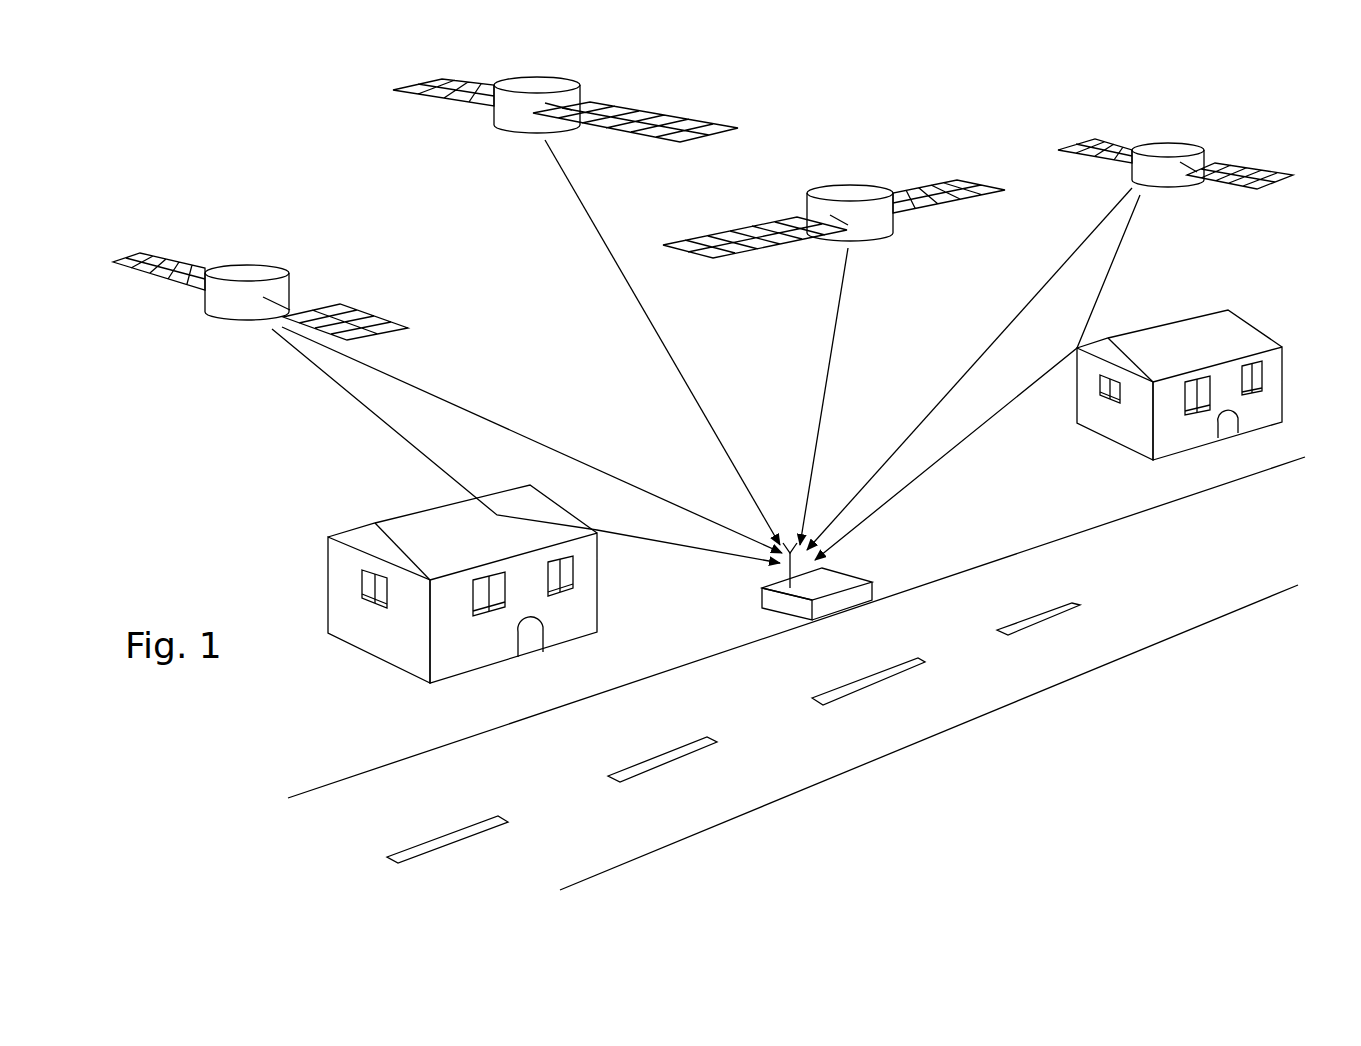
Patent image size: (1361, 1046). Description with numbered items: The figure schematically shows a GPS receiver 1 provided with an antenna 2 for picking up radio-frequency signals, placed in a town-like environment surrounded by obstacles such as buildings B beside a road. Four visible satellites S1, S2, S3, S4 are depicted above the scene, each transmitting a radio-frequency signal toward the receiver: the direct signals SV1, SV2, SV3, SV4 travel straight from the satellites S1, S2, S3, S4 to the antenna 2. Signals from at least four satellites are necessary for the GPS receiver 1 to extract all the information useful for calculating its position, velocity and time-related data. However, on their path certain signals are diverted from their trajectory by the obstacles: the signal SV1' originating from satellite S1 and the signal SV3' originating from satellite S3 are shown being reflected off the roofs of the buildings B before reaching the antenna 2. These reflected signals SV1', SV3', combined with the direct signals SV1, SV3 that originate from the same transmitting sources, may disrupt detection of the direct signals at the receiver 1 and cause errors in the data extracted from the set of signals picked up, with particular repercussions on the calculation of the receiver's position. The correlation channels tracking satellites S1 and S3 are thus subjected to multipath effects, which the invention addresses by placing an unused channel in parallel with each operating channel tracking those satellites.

The satellite S1 is at (260, 287).
The satellite S2 is at (834, 207).
The satellite S3 is at (1175, 150).
The satellite S4 is at (565, 94).
The direct signal SV1 is at (532, 440).
The reflected signal SV1' is at (526, 446).
The direct signal SV2 is at (852, 396).
The direct signal SV3 is at (969, 369).
The reflected signal SV3' is at (993, 377).
The direct signal SV4 is at (662, 342).
The building B is at (350, 582).
The GPS receiver 1 is at (832, 578).
The antenna 2 is at (778, 568).